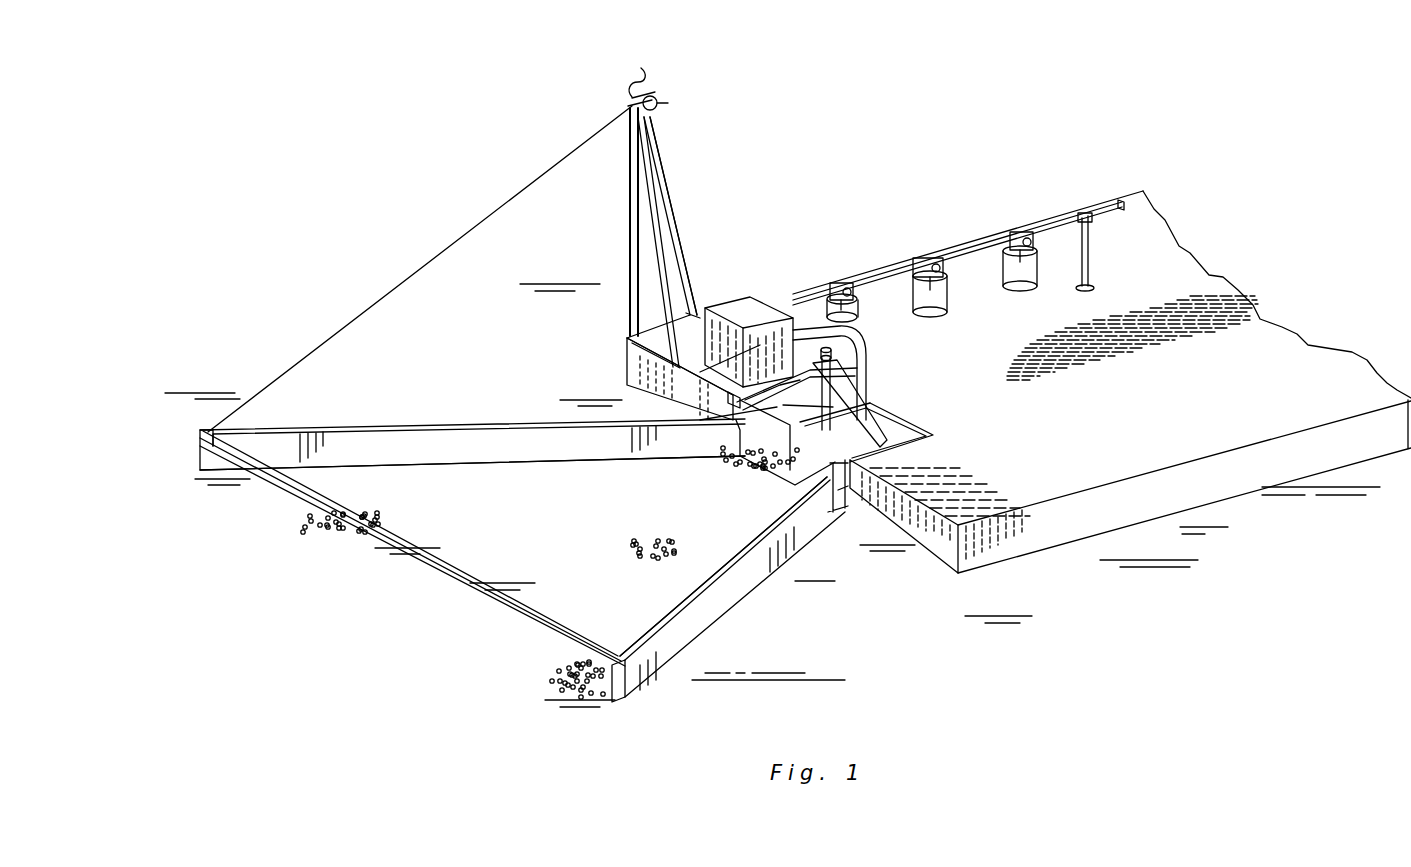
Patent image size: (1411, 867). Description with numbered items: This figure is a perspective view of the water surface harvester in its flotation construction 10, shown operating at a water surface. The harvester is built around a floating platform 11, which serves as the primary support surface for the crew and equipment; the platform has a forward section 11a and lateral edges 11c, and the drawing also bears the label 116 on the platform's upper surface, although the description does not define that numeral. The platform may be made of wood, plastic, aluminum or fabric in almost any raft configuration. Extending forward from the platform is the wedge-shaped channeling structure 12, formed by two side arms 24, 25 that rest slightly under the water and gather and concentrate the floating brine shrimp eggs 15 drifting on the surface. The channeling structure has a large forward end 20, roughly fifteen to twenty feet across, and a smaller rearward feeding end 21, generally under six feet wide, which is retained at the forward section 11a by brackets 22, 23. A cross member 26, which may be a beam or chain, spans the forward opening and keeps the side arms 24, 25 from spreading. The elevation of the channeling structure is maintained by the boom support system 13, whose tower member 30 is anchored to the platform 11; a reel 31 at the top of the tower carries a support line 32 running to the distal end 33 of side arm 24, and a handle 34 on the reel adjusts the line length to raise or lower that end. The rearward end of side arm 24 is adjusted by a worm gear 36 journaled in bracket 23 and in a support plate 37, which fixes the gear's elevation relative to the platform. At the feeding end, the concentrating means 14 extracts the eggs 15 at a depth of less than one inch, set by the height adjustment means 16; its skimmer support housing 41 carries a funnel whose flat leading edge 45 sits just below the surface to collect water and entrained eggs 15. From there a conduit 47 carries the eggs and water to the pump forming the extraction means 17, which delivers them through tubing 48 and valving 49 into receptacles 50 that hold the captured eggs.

The flotation construction 10 is at (880, 249).
The platform 11 is at (1070, 500).
The forward section 11a is at (931, 532).
The lateral edges 11c is at (1240, 483).
The slab top surface 116 is at (1117, 395).
The wedge-shaped channeling structure 12 is at (728, 590).
The boom support system 13 is at (680, 210).
The concentrating means 14 is at (745, 458).
The brine shrimp eggs 15 is at (300, 522).
The height adjustment means 16 is at (875, 408).
The extraction means 17 is at (746, 306).
The forward end 20 is at (440, 590).
The rearward feeding end 21 is at (730, 534).
The bracket 22 is at (836, 510).
The bracket 23 is at (660, 395).
The side arm 24 is at (400, 430).
The side arm 25 is at (682, 612).
The cross member 26 is at (440, 545).
The tower member 30 is at (660, 178).
The reel 31 is at (678, 94).
The support line 32 is at (430, 240).
The distal end 33 is at (196, 434).
The handle 34 is at (630, 86).
The worm gear 36 is at (670, 378).
The support plate 37 is at (660, 360).
The skimmer support housing 41 is at (935, 440).
The leading edge 45 is at (730, 474).
The conduit 47 is at (868, 345).
The tubing 48 is at (795, 300).
The valving 49 is at (844, 282).
The receptacles 50 is at (862, 316).